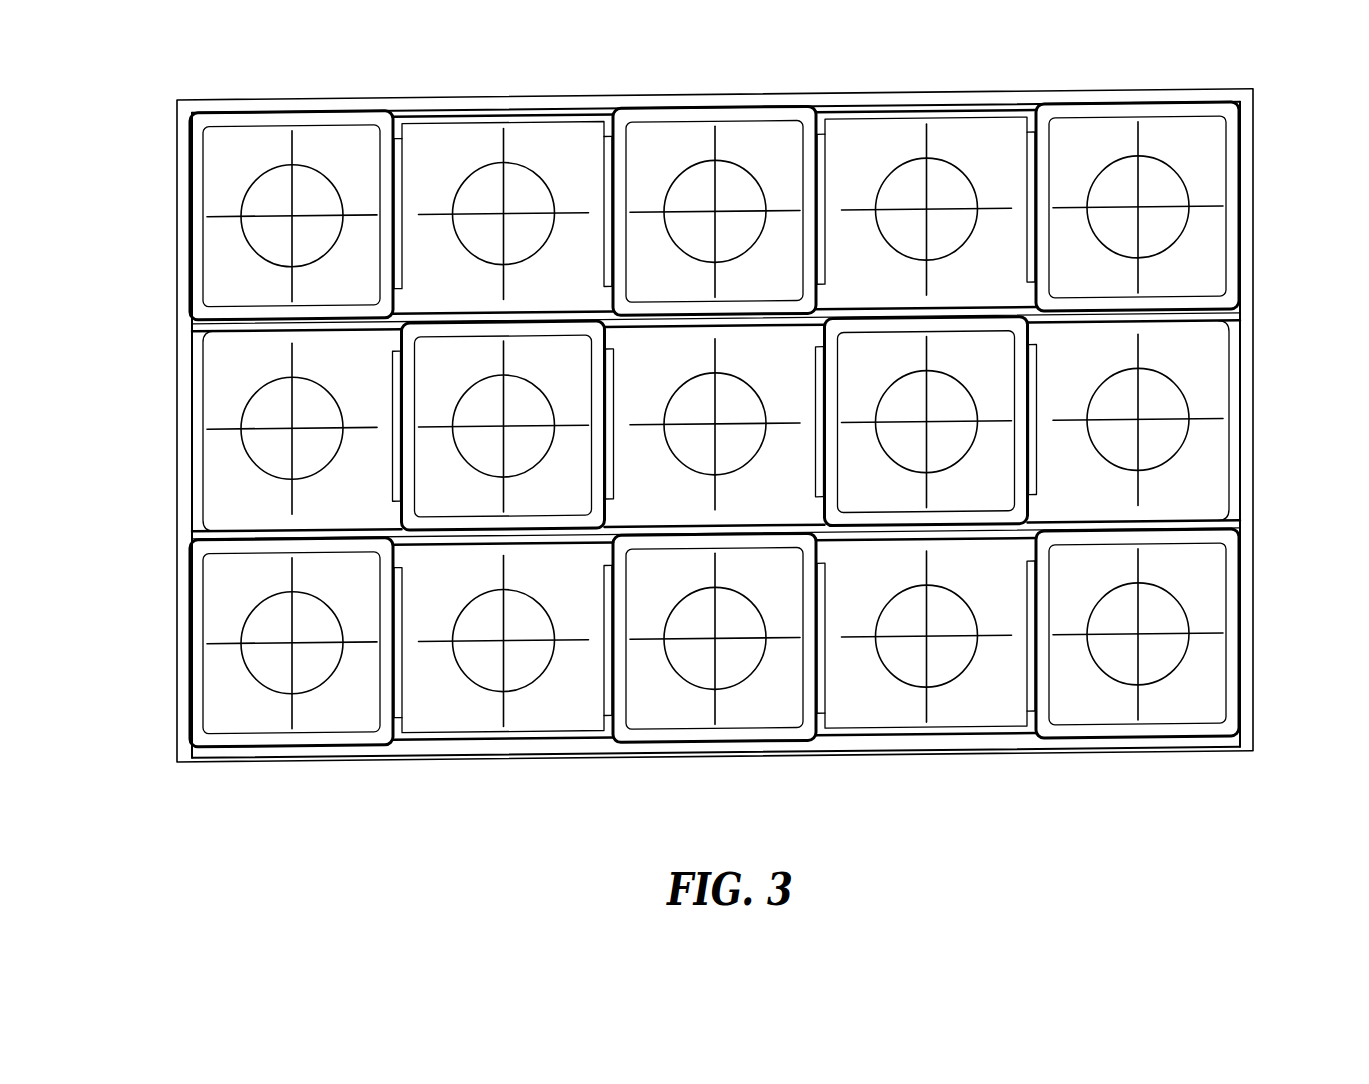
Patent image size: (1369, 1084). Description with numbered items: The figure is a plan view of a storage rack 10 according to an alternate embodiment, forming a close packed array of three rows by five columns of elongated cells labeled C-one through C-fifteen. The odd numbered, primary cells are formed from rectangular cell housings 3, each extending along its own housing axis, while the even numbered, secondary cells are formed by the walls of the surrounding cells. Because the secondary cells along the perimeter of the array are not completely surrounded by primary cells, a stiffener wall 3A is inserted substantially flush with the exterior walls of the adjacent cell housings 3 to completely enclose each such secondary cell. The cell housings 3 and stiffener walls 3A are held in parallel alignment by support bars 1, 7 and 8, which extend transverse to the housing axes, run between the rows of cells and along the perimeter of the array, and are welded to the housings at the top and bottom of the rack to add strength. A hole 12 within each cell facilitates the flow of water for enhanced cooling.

The support bar 1 is at (1211, 103).
The cell housing 3 is at (318, 110).
The stiffener wall 3A is at (473, 118).
The support bar 7 is at (1247, 158).
The support bar 8 is at (1215, 328).
The storage rack 10 is at (1328, 113).
The hole 12 is at (270, 200).